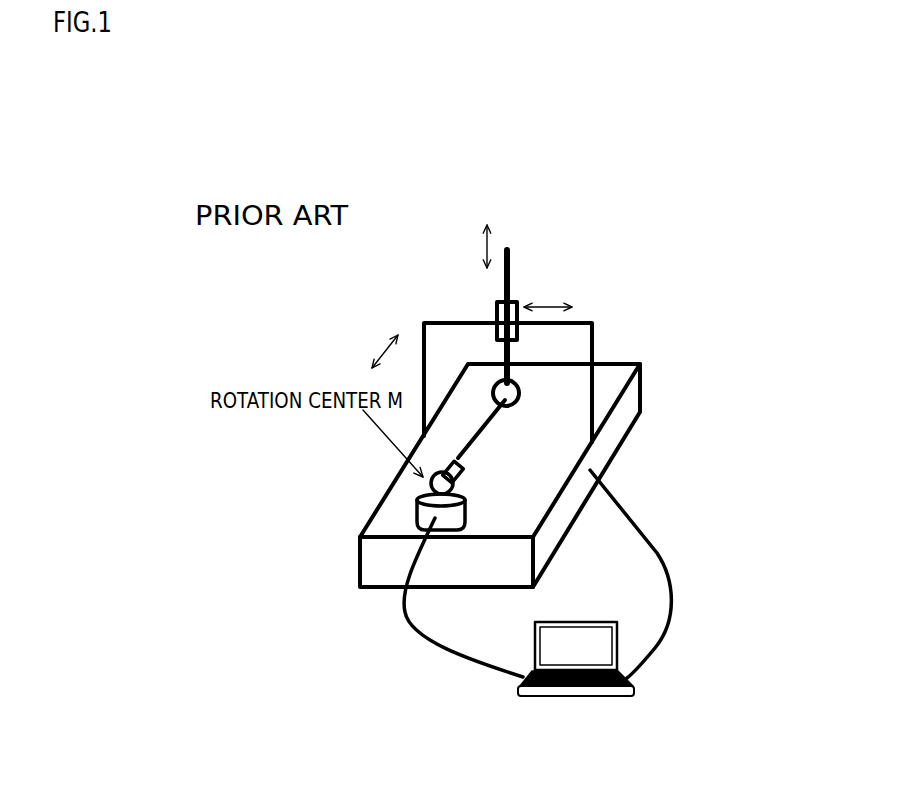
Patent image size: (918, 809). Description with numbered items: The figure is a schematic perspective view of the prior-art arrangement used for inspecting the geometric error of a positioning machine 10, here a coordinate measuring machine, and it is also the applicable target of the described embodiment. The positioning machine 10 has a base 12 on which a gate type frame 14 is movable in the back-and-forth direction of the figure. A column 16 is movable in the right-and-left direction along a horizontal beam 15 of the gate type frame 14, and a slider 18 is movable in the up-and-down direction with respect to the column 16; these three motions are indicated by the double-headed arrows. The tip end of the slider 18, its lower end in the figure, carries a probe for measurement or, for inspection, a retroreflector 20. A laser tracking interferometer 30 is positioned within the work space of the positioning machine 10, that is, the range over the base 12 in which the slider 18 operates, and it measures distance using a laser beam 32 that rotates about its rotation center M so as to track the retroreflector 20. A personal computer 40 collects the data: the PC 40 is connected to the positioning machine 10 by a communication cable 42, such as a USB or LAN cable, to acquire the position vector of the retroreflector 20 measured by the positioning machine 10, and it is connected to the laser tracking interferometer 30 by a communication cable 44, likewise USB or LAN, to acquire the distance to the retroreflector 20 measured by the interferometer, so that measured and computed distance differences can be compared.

The positioning machine 10 is at (588, 312).
The base 12 is at (642, 383).
The gate type frame 14 is at (595, 335).
The horizontal beam 15 is at (532, 326).
The column 16 is at (515, 302).
The slider 18 is at (510, 270).
The retroreflector 20 is at (496, 387).
The laser tracking interferometer 30 is at (417, 508).
The laser beam 32 is at (492, 430).
The personal computer 40 is at (572, 697).
The communication cable 42 is at (676, 594).
The communication cable 44 is at (442, 642).